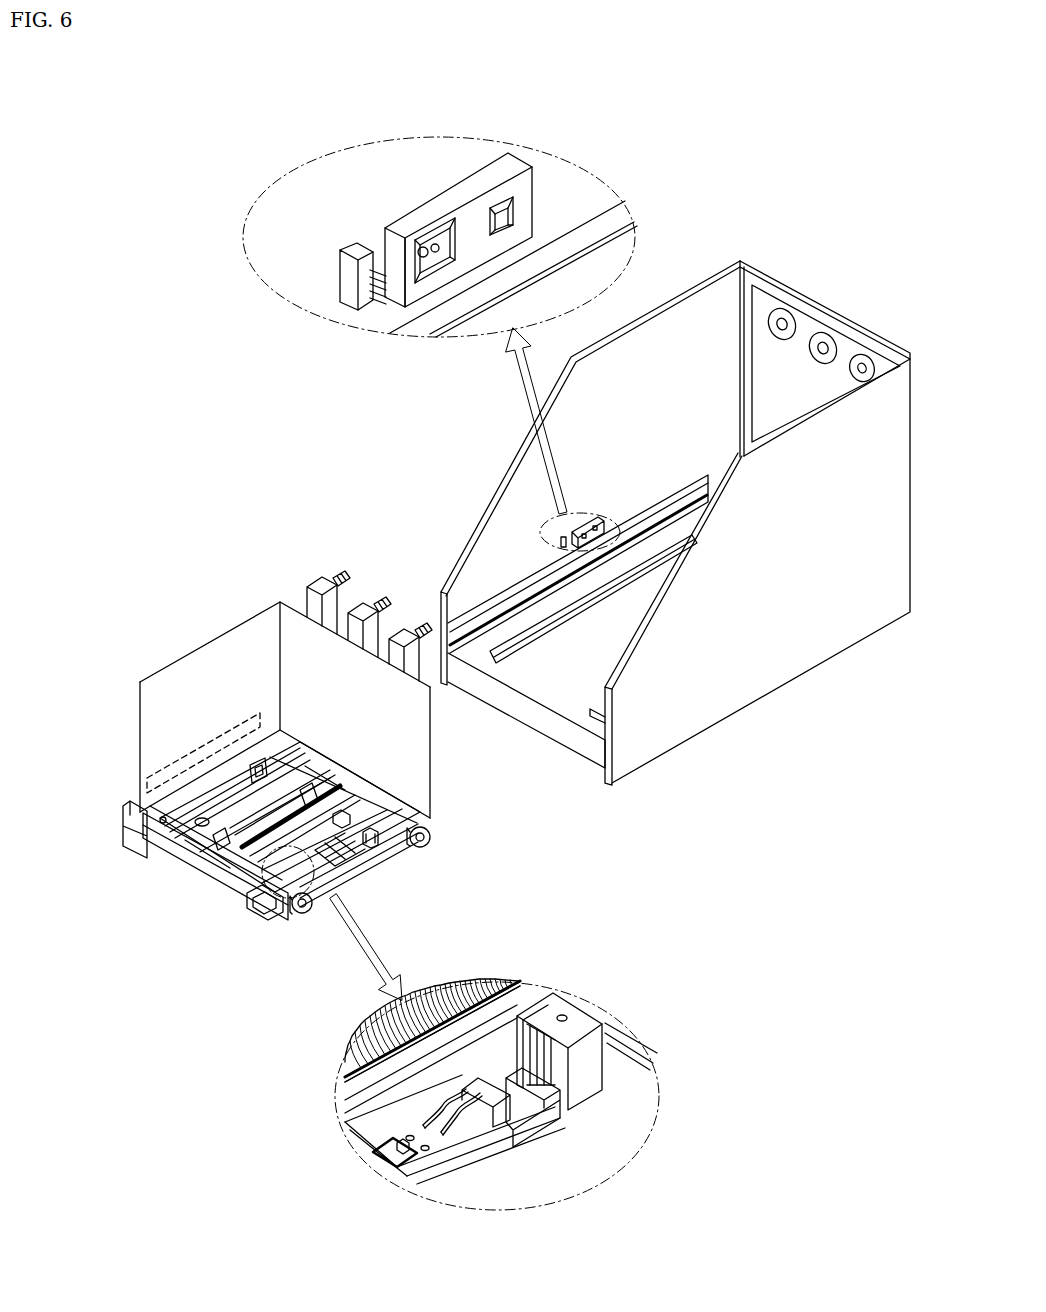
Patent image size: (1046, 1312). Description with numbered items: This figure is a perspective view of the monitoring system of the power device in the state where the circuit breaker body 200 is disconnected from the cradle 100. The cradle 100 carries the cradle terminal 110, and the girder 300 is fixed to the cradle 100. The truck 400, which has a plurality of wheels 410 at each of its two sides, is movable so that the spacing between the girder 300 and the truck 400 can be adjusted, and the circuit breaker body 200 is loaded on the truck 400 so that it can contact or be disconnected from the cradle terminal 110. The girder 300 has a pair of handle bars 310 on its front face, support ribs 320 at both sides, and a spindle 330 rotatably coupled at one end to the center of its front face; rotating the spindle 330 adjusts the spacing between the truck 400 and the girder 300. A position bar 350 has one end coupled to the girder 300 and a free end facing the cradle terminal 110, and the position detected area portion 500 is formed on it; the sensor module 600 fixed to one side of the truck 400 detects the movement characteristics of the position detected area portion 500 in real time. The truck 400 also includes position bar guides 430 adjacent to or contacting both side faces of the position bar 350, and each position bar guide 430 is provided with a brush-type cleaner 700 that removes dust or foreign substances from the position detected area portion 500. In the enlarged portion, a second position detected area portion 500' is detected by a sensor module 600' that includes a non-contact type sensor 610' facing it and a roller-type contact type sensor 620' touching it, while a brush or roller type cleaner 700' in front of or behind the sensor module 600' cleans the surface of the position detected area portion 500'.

The cradle 100 is at (795, 677).
The cradle terminal 110 is at (823, 335).
The circuit breaker body 200 is at (224, 637).
The girder 300 is at (192, 888).
The handle bars 310 is at (270, 912).
The support ribs 320 is at (292, 913).
The spindle 330 is at (233, 873).
The position bar 350 is at (340, 857).
The truck 400 is at (343, 899).
The wheels 410 is at (427, 841).
The position bar guides 430 is at (545, 1010).
The position detected area portion 500 is at (519, 1034).
The sensor module 600 is at (389, 1106).
The brush-type cleaner 700 is at (511, 1041).
The position detected area portion 500' is at (176, 714).
The sensor module 600' is at (458, 195).
The non-contact type sensor 610' is at (414, 183).
The contact type sensor 620' is at (520, 159).
The brush or roller type cleaner 700' is at (345, 197).